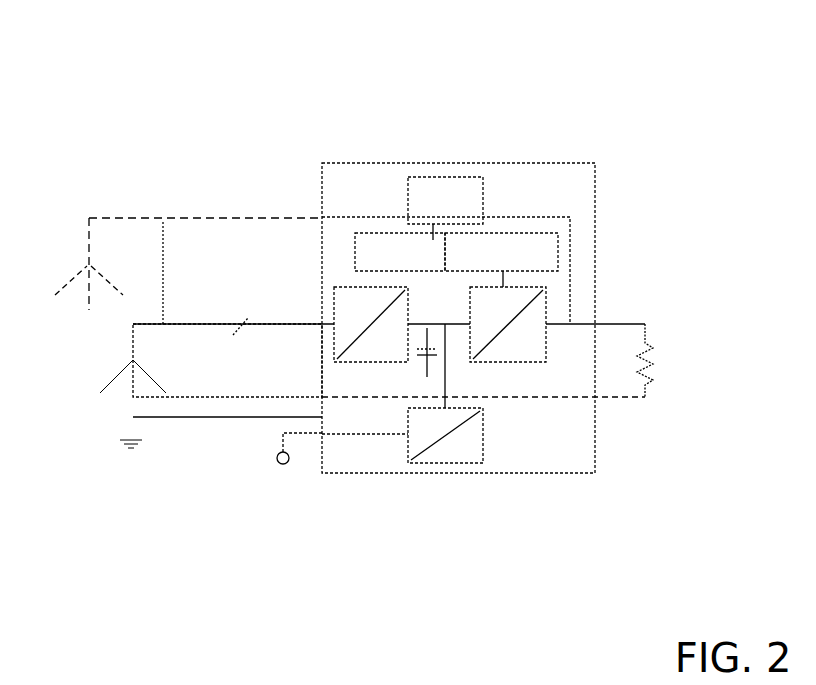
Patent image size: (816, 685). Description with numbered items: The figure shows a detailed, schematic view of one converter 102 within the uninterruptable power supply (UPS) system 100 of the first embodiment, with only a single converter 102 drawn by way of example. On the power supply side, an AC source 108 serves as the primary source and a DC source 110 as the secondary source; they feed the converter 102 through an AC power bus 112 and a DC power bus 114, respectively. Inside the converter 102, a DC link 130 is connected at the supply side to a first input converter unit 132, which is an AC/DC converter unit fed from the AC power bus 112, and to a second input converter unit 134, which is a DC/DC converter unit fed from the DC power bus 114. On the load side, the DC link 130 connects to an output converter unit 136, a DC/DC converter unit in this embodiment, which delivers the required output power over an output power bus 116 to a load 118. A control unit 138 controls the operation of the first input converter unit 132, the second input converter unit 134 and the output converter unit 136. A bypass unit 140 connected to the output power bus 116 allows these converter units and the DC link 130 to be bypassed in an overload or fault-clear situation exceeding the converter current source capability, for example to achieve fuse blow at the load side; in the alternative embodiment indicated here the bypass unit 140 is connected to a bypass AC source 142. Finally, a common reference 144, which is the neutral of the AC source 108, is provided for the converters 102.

The uninterruptable power supply (UPS) system 100 is at (233, 109).
The converter 102 is at (573, 160).
The AC source 108 is at (135, 365).
The DC source 110 is at (283, 464).
The AC power bus 112 is at (204, 329).
The DC power bus 114 is at (303, 437).
The output power bus 116 is at (602, 330).
The load 118 is at (645, 387).
The DC link 130 is at (453, 330).
The first input converter unit 132 is at (384, 350).
The second input converter unit 134 is at (432, 448).
The output converter unit 136 is at (531, 352).
The control unit 138 is at (372, 252).
The bypass unit 140 is at (423, 177).
The bypass AC source 142 is at (86, 268).
The common reference 144 is at (235, 417).